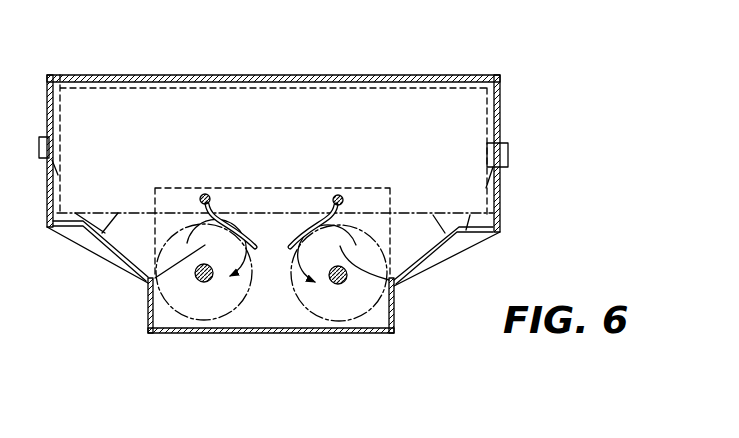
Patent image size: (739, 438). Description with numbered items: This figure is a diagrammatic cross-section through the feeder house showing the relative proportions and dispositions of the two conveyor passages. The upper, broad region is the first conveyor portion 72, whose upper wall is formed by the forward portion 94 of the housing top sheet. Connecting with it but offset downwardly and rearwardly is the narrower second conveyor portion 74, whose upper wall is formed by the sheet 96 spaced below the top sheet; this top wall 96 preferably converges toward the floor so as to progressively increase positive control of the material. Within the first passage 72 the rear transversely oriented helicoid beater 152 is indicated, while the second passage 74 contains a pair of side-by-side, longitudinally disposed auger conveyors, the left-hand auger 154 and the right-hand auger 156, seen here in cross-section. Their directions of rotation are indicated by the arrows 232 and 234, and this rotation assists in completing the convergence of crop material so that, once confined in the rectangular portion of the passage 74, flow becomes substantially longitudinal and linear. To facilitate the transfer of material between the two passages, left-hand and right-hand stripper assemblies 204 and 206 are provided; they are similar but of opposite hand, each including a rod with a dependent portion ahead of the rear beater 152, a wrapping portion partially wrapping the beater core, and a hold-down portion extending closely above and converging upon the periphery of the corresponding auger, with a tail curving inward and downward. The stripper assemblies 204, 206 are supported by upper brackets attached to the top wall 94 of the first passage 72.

The first conveyor portion 72 is at (240, 103).
The second conveyor portion 74 is at (273, 323).
The forward portion of top sheet 94 is at (388, 77).
The sheet forming upper wall of second conveyor passage 96 is at (296, 187).
The rear helicoid beater 152 is at (470, 132).
The left-hand auger conveyor 154 is at (352, 323).
The right-hand auger conveyor 156 is at (206, 323).
The left-hand stripper assembly 204 is at (388, 188).
The right-hand stripper assembly 206 is at (222, 198).
The arrow indicating auger rotation direction 232 is at (395, 306).
The arrow indicating auger rotation direction 234 is at (145, 280).